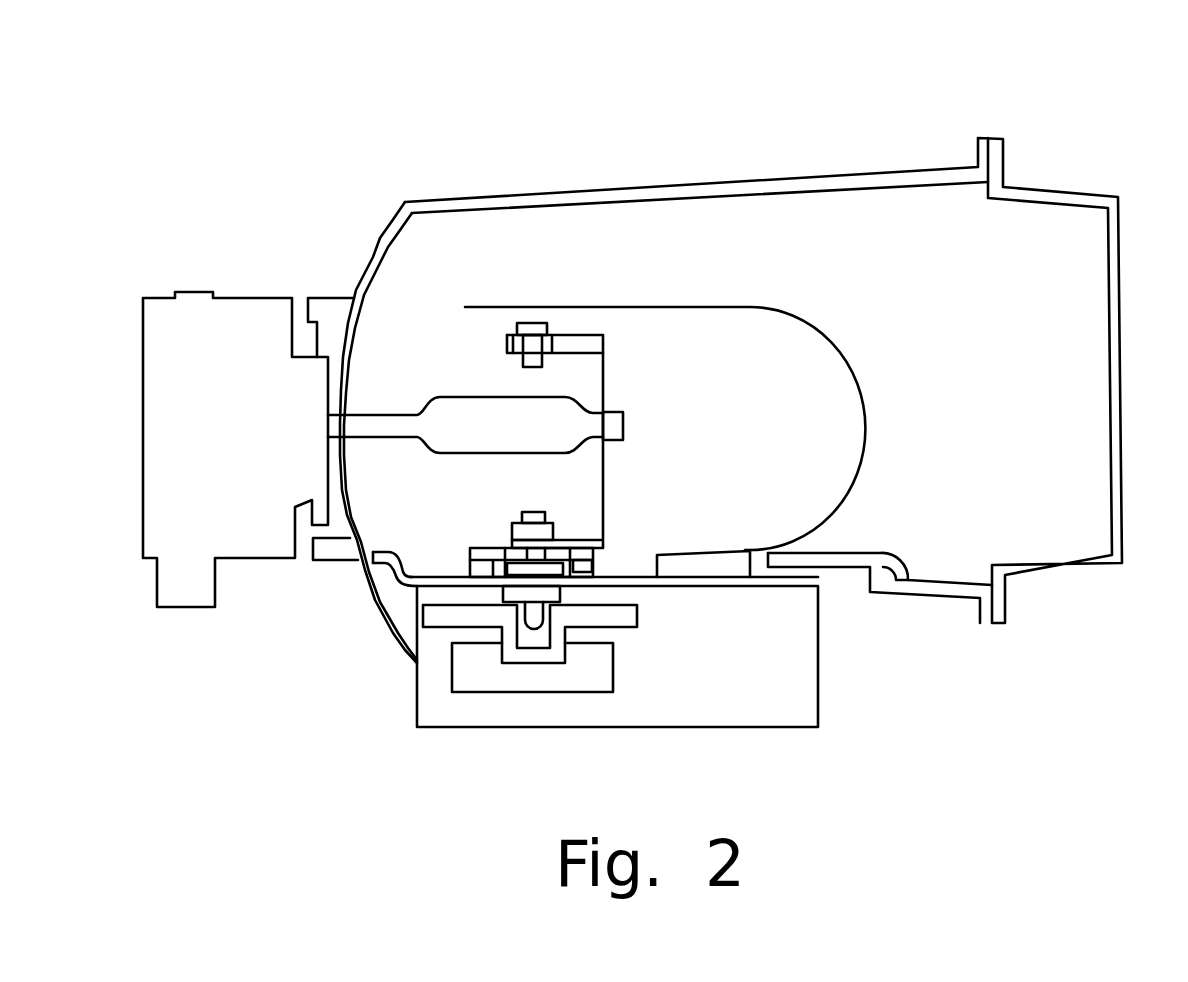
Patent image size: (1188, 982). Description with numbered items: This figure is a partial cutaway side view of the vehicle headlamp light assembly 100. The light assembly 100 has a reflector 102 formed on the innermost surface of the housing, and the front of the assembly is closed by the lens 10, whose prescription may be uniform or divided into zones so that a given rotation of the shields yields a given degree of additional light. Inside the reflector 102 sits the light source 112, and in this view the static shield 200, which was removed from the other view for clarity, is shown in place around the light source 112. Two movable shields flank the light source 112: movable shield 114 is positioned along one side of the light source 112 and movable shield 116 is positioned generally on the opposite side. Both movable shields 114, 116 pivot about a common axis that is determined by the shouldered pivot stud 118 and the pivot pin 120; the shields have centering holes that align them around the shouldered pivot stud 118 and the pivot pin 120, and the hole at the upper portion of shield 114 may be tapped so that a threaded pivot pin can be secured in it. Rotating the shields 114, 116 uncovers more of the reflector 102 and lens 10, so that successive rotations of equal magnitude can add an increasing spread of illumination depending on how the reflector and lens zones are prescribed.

The light assembly 100 is at (868, 108).
The lens 10 is at (1122, 377).
The reflector 102 is at (393, 243).
The static shield 200 is at (864, 447).
The movable shield 114 is at (580, 335).
The movable shield 116 is at (567, 355).
The light source 112 is at (462, 455).
The pivot pin 120 is at (536, 513).
The shouldered pivot stud 118 is at (528, 648).